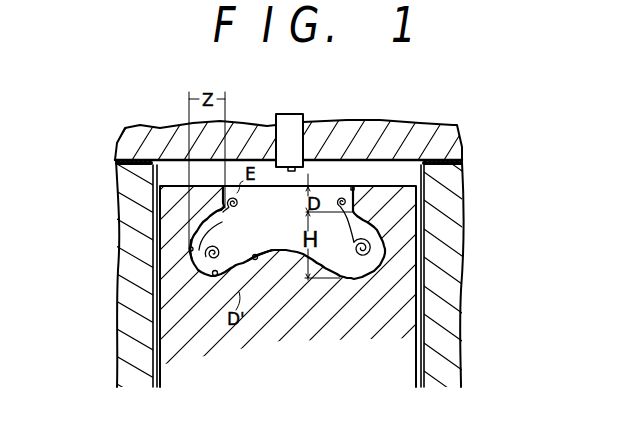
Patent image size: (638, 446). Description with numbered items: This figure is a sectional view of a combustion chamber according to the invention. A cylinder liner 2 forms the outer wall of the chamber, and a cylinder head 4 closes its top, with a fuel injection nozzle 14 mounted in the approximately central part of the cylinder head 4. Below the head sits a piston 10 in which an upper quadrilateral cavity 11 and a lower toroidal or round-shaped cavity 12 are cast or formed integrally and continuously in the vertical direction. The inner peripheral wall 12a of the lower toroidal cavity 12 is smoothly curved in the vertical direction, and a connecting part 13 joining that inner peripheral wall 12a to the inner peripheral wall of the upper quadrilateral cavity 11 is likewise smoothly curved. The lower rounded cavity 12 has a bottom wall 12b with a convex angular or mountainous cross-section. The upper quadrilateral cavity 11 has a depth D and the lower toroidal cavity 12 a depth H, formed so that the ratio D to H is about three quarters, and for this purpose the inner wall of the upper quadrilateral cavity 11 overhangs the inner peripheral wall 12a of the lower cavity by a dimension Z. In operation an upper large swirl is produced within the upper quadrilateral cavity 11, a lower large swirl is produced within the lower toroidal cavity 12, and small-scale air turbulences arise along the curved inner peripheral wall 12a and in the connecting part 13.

The cylinder liner 2 is at (445, 256).
The cylinder head 4 is at (361, 136).
The piston 10 is at (407, 209).
The upper quadrilateral cavity 11 is at (350, 187).
The lower toroidal cavity 12 is at (215, 276).
The inner peripheral wall 12a is at (189, 250).
The bottom wall 12b is at (257, 260).
The connecting part 13 is at (223, 222).
The fuel injection nozzle 14 is at (285, 113).